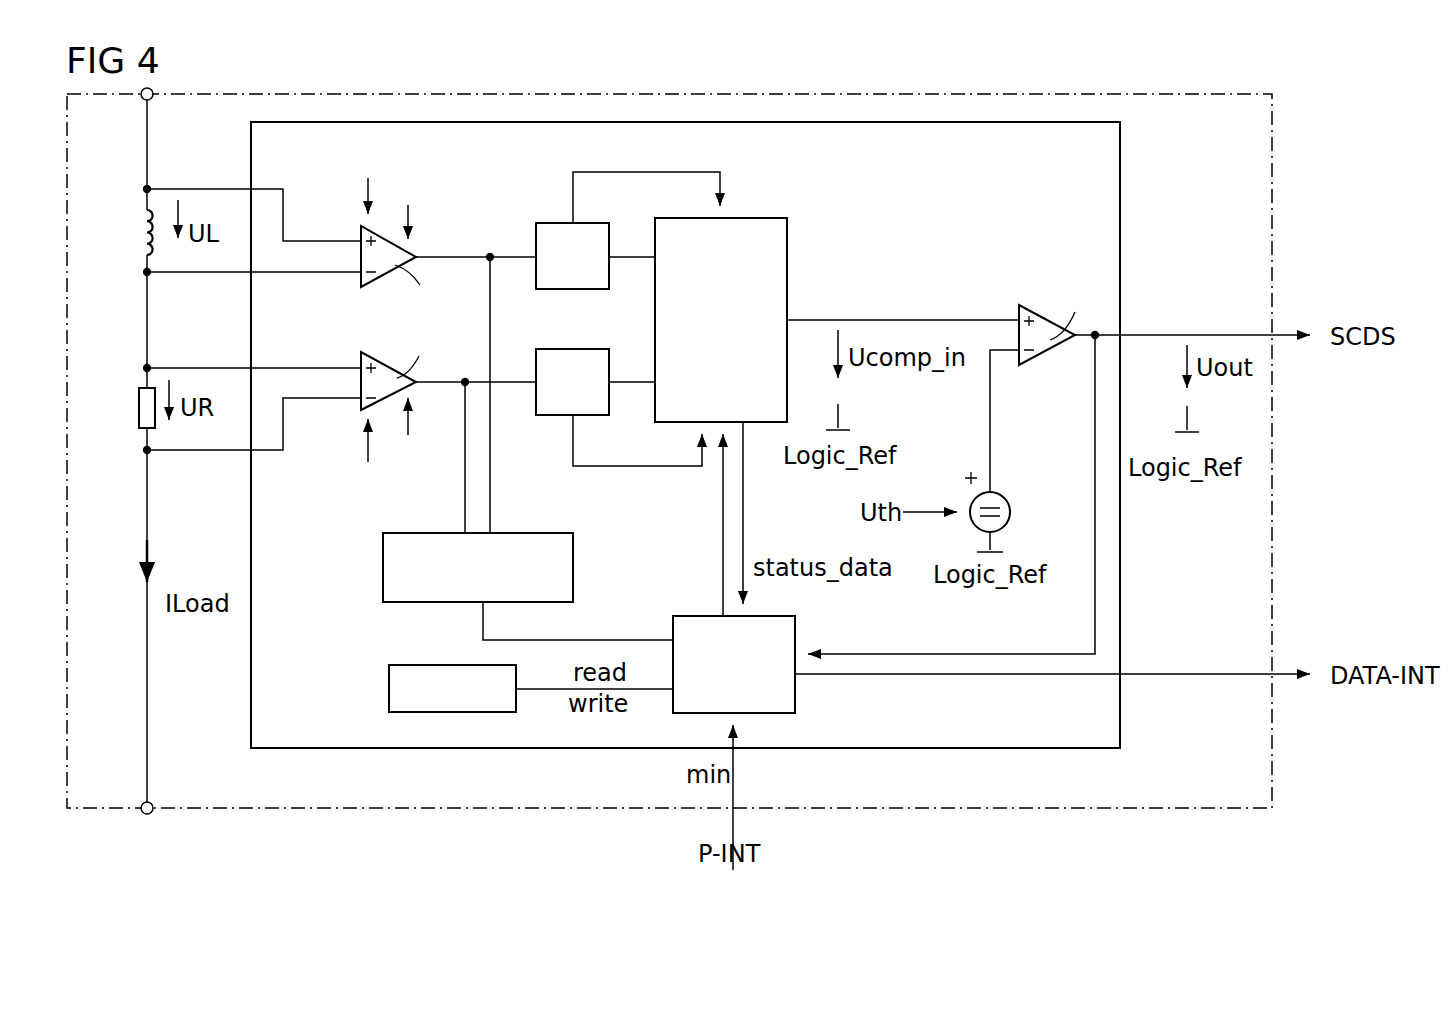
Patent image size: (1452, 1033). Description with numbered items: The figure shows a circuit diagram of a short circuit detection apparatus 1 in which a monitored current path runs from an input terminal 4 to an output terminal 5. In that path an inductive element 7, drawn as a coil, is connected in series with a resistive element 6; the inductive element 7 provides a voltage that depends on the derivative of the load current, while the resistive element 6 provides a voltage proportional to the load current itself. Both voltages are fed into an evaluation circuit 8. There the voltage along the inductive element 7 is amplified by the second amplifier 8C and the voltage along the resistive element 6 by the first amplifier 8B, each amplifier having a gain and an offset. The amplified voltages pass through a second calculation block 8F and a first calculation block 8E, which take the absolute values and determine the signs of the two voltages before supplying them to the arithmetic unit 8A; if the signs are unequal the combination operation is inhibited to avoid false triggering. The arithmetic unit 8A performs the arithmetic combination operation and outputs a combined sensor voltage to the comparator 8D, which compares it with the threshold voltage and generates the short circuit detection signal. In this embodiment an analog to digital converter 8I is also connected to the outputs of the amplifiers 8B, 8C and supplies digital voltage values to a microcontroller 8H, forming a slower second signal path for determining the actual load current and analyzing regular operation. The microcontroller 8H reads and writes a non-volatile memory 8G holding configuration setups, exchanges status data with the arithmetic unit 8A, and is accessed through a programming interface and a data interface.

The short circuit detection apparatus 1 is at (1272, 186).
The input terminal 4 is at (154, 99).
The output terminal 5 is at (154, 803).
The resistive element 6 is at (138, 392).
The inductive element 7 is at (147, 215).
The evaluation circuit 8 is at (1120, 204).
The arithmetic unit 8A is at (760, 218).
The first amplifier 8B is at (361, 356).
The second amplifier 8C is at (361, 230).
The comparator 8D is at (1019, 311).
The first calculation block 8E is at (556, 416).
The second calculation block 8F is at (553, 223).
The non-volatile memory 8G is at (389, 689).
The microcontroller 8H is at (797, 630).
The analog to digital converter 8I is at (383, 567).